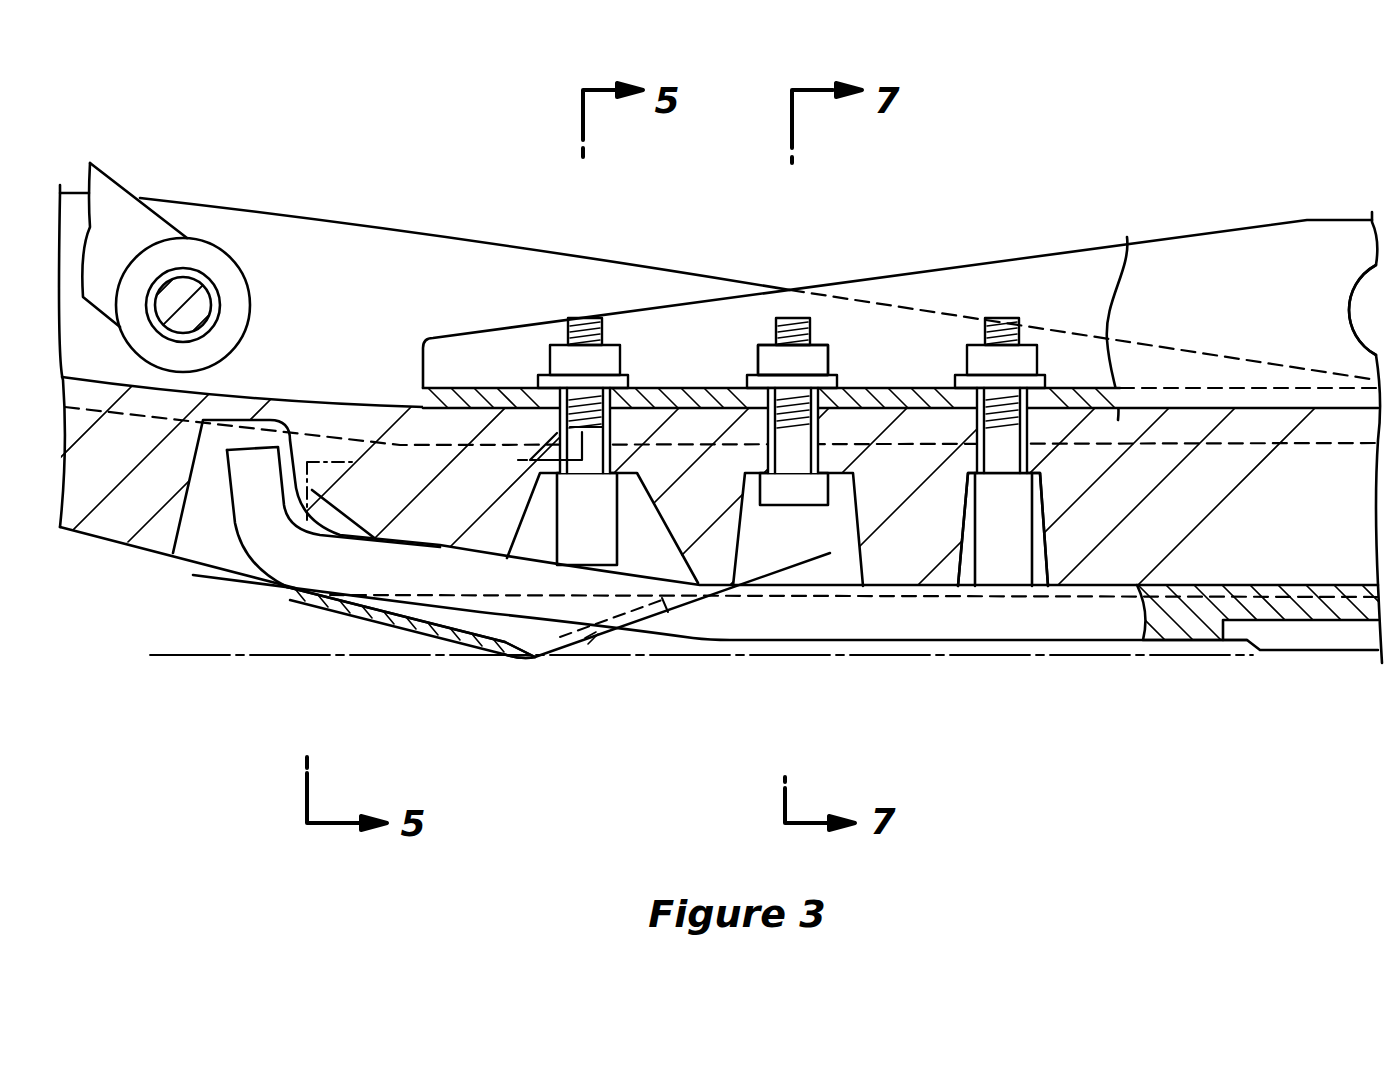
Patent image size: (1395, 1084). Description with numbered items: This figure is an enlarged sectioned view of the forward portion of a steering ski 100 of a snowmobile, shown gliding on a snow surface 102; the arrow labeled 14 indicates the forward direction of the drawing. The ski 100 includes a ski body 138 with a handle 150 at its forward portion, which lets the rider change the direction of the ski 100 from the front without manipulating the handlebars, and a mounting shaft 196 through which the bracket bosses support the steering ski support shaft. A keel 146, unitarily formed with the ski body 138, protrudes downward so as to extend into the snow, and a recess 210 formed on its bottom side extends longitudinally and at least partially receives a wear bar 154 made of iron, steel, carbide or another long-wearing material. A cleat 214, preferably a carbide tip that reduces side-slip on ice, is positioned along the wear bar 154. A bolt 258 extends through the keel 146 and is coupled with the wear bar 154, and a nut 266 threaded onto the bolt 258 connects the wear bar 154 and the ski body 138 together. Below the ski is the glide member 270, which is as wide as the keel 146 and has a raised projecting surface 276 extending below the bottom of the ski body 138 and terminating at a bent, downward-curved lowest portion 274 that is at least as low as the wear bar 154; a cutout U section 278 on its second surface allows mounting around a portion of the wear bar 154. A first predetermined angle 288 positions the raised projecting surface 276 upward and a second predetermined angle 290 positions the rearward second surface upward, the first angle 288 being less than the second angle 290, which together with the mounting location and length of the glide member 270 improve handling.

The gas turbine engine forward direction 14 is at (417, 137).
The front ski 100 is at (1222, 190).
The snow surface 102 is at (932, 653).
The ski body 138 is at (1173, 405).
The keel 146 is at (1085, 527).
The handle 150 is at (117, 207).
The wear bar 154 is at (763, 610).
The mounting shaft 196 is at (1362, 313).
The recess 210 is at (1184, 597).
The cleat 214 is at (1290, 632).
The bolt 258 is at (583, 318).
The nut 266 is at (818, 362).
The glide member 270 is at (463, 652).
The lowest portion 274 is at (535, 662).
The raised projecting surface 276 is at (423, 634).
The cutout U section 278 is at (587, 633).
The first predetermined angle 288 is at (210, 653).
The second predetermined angle 290 is at (813, 567).